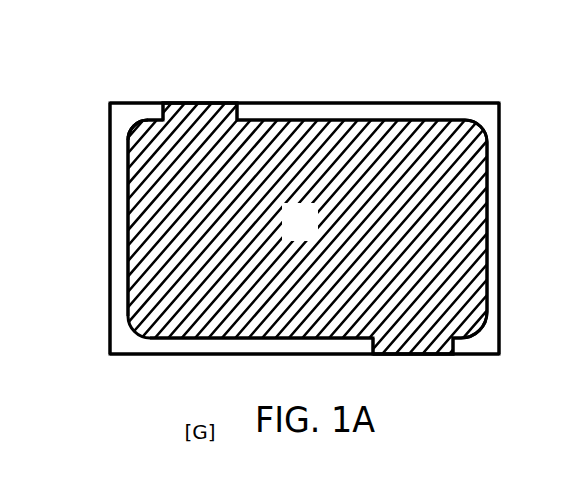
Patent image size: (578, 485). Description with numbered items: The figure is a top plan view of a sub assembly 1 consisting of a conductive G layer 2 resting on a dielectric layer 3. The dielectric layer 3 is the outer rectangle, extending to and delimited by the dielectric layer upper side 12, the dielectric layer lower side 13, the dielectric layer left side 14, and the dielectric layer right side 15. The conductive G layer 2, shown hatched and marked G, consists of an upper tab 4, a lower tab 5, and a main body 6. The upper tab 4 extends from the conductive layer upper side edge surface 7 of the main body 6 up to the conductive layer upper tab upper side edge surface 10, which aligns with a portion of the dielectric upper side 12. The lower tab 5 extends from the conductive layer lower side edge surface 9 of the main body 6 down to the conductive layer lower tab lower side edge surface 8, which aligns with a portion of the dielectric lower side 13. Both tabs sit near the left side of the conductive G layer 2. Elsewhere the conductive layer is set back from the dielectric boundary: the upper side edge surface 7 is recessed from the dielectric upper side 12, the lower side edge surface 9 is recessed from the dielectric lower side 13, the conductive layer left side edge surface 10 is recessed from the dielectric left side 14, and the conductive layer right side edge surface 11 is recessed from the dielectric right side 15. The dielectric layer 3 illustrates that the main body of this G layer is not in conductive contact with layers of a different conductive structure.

The sub assembly 1 is at (264, 66).
The conductive G layer 2 is at (258, 137).
The dielectric layer 3 is at (435, 120).
The upper tab 4 is at (130, 142).
The lower tab 5 is at (470, 350).
The main body 6 is at (208, 262).
The conductive layer upper side edge surface 7 is at (395, 120).
The conductive layer lower tab lower side edge surface 8 is at (392, 355).
The conductive layer lower side edge surface 9 is at (272, 343).
The conductive layer upper tab upper side edge surface 10 is at (193, 103).
The conductive layer right side edge surface 11 is at (487, 226).
The dielectric layer upper side 12 is at (330, 103).
The dielectric layer lower side 13 is at (320, 354).
The dielectric layer left side 14 is at (110, 178).
The dielectric layer right side 15 is at (500, 212).